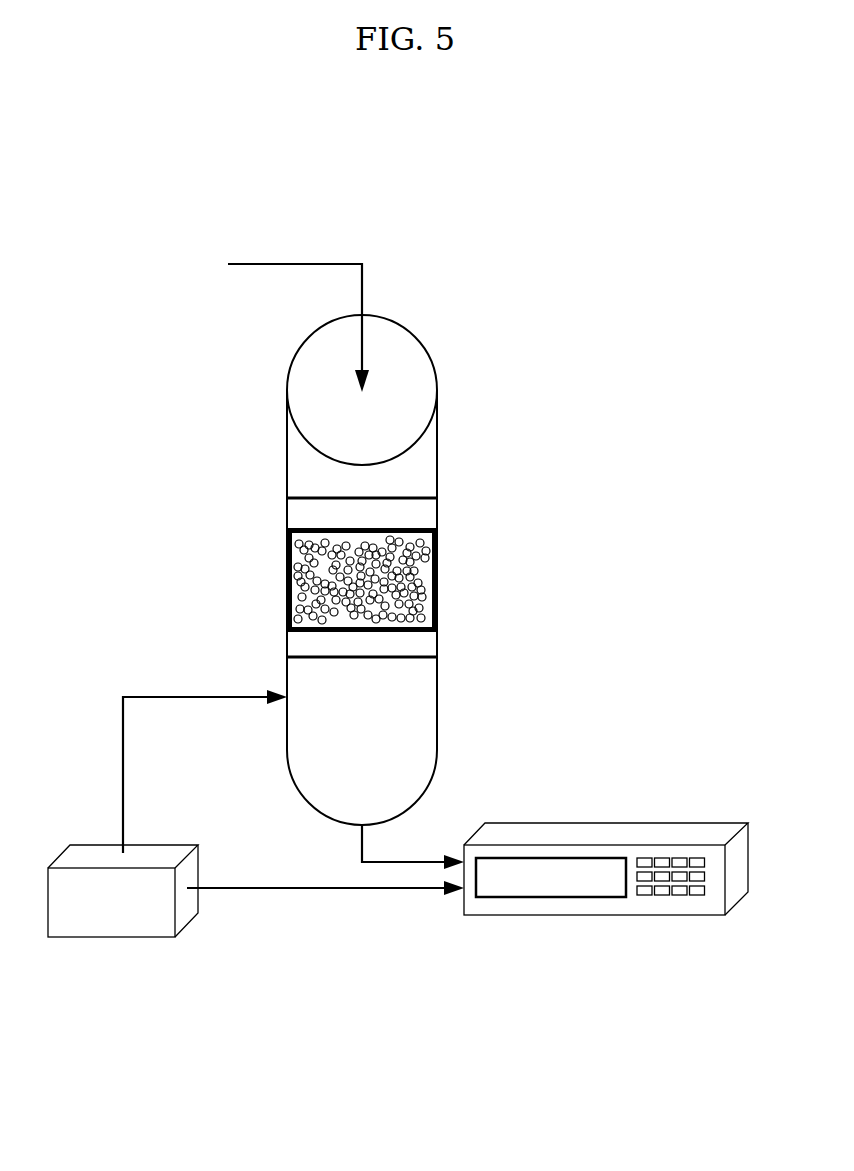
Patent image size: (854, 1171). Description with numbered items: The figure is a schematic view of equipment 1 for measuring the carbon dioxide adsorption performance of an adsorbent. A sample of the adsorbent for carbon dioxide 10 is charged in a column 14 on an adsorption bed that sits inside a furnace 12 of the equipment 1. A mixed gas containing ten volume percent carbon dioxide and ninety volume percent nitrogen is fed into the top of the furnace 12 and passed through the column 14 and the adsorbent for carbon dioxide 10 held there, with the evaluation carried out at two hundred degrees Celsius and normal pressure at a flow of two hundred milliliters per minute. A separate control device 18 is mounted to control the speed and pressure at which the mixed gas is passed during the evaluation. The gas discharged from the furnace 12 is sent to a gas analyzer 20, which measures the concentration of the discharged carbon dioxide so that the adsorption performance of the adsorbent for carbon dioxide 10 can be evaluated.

The equipment for measuring carbon dioxide adsorption performance 1 is at (441, 239).
The adsorbent for carbon dioxide 10 is at (420, 573).
The furnace 12 is at (437, 447).
The column 14 is at (318, 498).
The control device 18 is at (113, 937).
The gas analyzer 20 is at (592, 915).